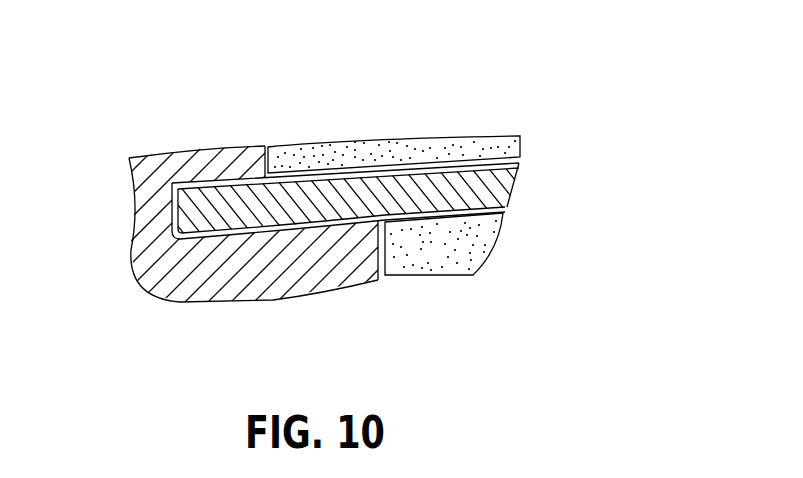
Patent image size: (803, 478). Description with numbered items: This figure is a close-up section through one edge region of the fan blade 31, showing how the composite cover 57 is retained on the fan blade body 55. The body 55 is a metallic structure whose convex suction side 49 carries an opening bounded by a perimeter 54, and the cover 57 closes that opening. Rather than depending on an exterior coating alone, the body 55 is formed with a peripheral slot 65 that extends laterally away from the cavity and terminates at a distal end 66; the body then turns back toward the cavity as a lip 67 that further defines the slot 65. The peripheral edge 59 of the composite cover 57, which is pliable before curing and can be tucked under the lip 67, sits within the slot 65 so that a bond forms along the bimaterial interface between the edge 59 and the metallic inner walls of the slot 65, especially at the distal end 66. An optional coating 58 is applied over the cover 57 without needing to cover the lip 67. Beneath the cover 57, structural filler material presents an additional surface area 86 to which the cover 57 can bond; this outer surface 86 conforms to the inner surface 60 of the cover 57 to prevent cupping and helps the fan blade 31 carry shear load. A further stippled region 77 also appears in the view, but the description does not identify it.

The fan blade 31 is at (587, 75).
The convex suction side 49 is at (173, 150).
The perimeter 54 is at (300, 146).
The fan blade body 55 is at (147, 290).
The cover 57 is at (516, 183).
The coating 58 is at (457, 135).
The peripheral edge 59 is at (172, 207).
The inner surface 60 is at (463, 212).
The peripheral slot 65 is at (247, 221).
The distal end 66 is at (193, 212).
The lip 67 is at (248, 147).
The cushion block 77 is at (448, 265).
The outer surface 86 is at (423, 218).